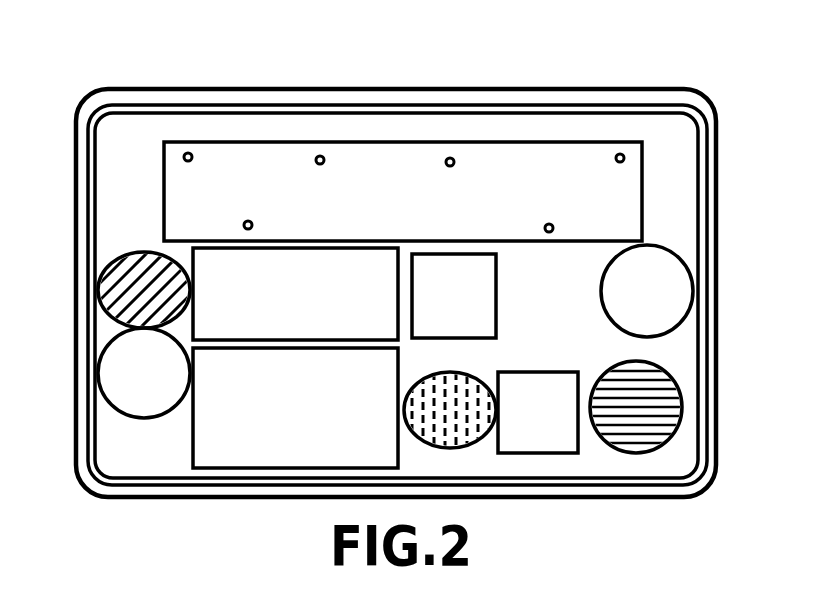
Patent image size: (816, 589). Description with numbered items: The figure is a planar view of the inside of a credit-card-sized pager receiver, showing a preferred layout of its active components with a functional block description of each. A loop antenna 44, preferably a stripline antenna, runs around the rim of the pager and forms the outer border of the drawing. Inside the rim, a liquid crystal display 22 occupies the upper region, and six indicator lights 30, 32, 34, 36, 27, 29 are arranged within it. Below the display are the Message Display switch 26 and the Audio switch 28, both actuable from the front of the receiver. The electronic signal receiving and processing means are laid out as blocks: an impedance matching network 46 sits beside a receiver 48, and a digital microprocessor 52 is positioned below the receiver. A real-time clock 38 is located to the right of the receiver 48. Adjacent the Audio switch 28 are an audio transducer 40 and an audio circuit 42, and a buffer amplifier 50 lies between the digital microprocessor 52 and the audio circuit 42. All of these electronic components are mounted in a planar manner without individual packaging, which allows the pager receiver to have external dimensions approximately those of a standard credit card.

The loop antenna 44 is at (208, 100).
The liquid crystal display 22 is at (549, 212).
The indicator light 30 is at (212, 165).
The indicator light 32 is at (343, 163).
The indicator light 34 is at (474, 165).
The indicator light 36 is at (598, 161).
The indicator light 27 is at (226, 217).
The indicator light 29 is at (574, 223).
The receiver 48 is at (300, 328).
The digital microprocessor 52 is at (377, 417).
The real-time clock 38 is at (476, 313).
The audio circuit 42 is at (556, 435).
The Message Display switch 26 is at (670, 300).
The impedance matching network 46 is at (112, 291).
The Audio switch 28 is at (115, 373).
The buffer amplifier 50 is at (455, 452).
The audio transducer 40 is at (665, 413).